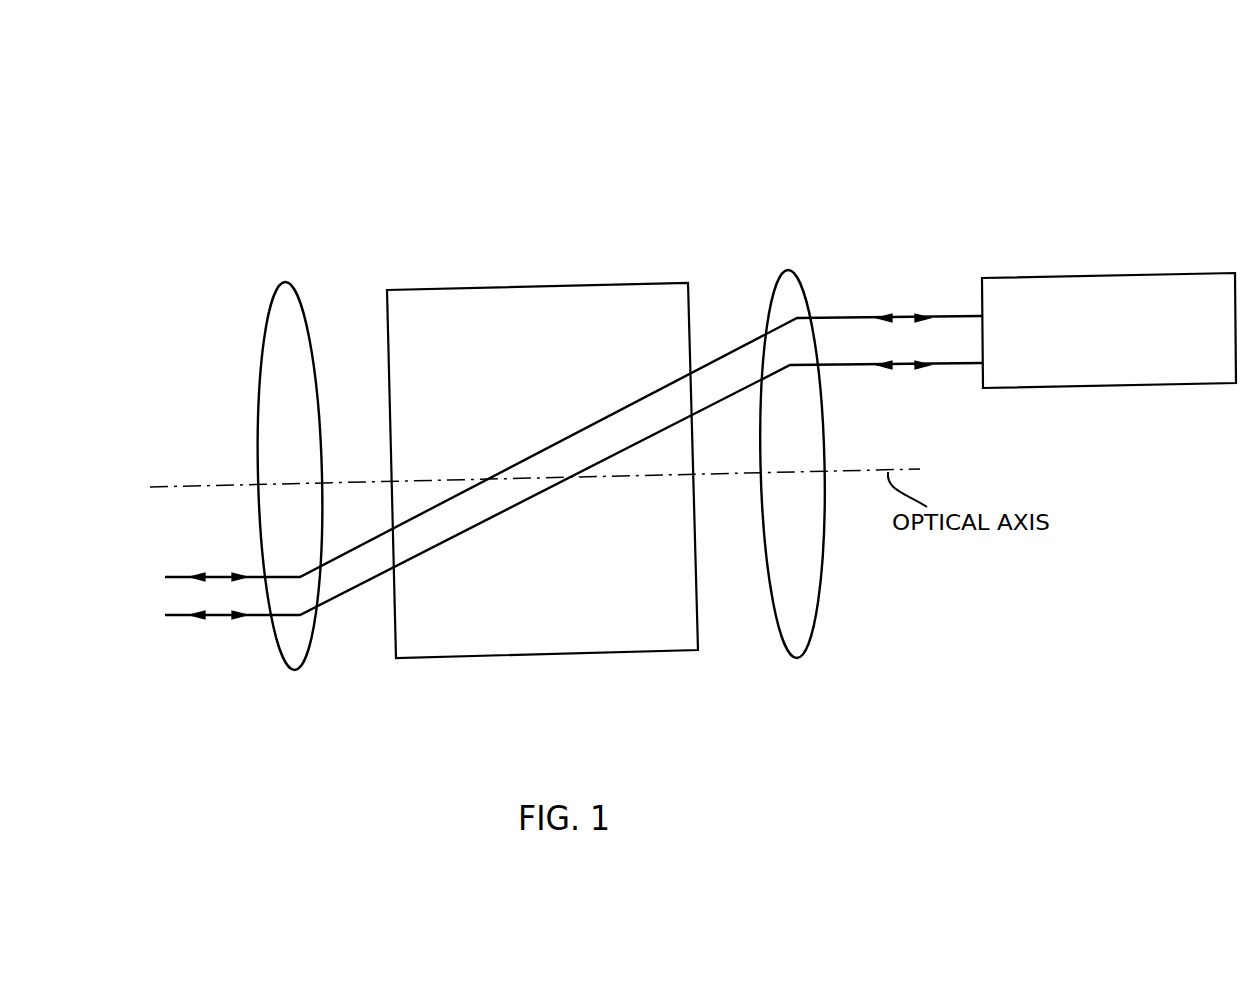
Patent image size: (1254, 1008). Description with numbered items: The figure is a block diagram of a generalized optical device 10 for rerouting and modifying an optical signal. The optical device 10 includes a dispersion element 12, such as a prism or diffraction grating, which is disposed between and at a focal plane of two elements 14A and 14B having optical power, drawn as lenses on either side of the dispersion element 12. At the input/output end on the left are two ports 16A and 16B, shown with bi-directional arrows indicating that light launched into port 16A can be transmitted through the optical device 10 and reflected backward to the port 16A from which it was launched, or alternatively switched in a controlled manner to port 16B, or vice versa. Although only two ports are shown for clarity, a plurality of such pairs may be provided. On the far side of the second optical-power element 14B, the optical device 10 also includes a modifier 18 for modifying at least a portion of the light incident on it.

The generalized optical device 10 is at (928, 193).
The dispersion element 12 is at (476, 288).
The element having optical power 14A is at (267, 318).
The element having optical power 14B is at (803, 287).
The port 16A is at (173, 577).
The port 16B is at (178, 615).
The modifier 18 is at (1188, 387).